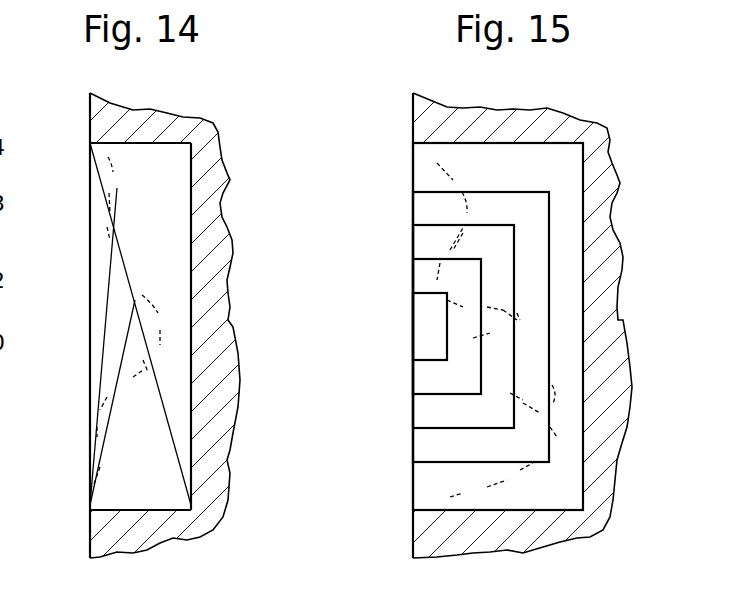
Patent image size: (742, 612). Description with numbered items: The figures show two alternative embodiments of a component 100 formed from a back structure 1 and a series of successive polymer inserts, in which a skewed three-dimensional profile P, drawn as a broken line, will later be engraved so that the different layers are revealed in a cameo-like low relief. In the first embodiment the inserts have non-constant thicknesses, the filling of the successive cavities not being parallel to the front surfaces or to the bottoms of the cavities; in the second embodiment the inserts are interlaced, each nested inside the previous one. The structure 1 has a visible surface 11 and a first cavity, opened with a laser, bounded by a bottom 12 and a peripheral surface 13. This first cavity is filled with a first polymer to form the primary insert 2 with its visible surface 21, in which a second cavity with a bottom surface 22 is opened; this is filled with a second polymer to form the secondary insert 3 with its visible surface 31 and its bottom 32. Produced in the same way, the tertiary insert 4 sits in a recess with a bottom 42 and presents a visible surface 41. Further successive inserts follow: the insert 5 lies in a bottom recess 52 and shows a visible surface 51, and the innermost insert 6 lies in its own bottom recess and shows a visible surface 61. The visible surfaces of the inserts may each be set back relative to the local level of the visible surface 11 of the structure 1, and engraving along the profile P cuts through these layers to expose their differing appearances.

In FIG. 14, the structure 1 is at (177, 126).
In FIG. 15, the structure 1 is at (565, 123).
In FIG. 14, the visible surface of the structure 11 is at (82, 128).
In FIG. 15, the visible surface of the structure 11 is at (402, 107).
In FIG. 14, the bottom 12 is at (182, 424).
In FIG. 15, the bottom 12 is at (572, 492).
In FIG. 14, the peripheral surface 13 is at (156, 155).
In FIG. 14, the primary insert 2 is at (178, 332).
In FIG. 15, the primary insert 2 is at (427, 160).
In FIG. 15, the visible surface of the primary insert 21 is at (402, 167).
In FIG. 15, the bottom surface 22 is at (538, 443).
In FIG. 14, the secondary insert 3 is at (153, 470).
In FIG. 15, the secondary insert 3 is at (463, 205).
In FIG. 15, the visible surface of the secondary insert 31 is at (402, 195).
In FIG. 15, the end surface of second layer 32 is at (503, 417).
In FIG. 14, the tertiary insert 4 is at (107, 375).
In FIG. 15, the tertiary insert 4 is at (455, 243).
In FIG. 15, the visible surface of the tertiary insert 41 is at (402, 238).
In FIG. 15, the bottom 42 is at (470, 382).
In FIG. 14, the insert 5 is at (95, 290).
In FIG. 15, the insert 5 is at (437, 287).
In FIG. 15, the visible surface of the insert 51 is at (402, 272).
In FIG. 15, the bottom recess 52 is at (437, 345).
In FIG. 15, the insert 6 is at (420, 332).
In FIG. 15, the visible surface of the insert 61 is at (402, 320).
In FIG. 14, the skewed profile P is at (157, 334).
In FIG. 15, the skewed profile P is at (473, 493).
In FIG. 15, the component 100 is at (370, 558).